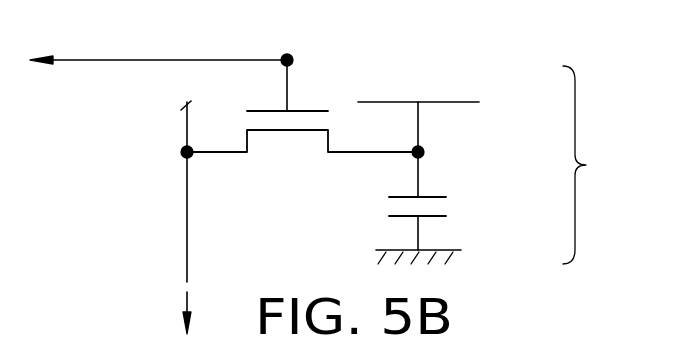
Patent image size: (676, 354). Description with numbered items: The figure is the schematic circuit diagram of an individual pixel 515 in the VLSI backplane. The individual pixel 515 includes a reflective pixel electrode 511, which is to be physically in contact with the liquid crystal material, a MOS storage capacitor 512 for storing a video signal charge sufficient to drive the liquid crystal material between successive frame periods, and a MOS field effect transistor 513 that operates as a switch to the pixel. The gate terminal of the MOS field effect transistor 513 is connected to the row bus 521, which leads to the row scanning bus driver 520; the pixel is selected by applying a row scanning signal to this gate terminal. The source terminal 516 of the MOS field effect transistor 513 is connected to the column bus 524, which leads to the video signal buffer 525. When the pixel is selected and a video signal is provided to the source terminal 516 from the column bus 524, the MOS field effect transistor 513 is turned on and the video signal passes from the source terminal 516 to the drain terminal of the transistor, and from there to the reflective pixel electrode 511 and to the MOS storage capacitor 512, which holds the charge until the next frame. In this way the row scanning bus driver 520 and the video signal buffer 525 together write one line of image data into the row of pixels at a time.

The reflective pixel electrode 511 is at (447, 101).
The MOS storage capacitor 512 is at (437, 205).
The MOS field effect transistor 513 is at (300, 131).
The individual pixel 515 is at (601, 165).
The source terminal 516 is at (182, 150).
The row scanning bus driver 520 is at (94, 42).
The row bus 521 is at (203, 59).
The column bus 524 is at (184, 222).
The video signal buffer 525 is at (184, 309).